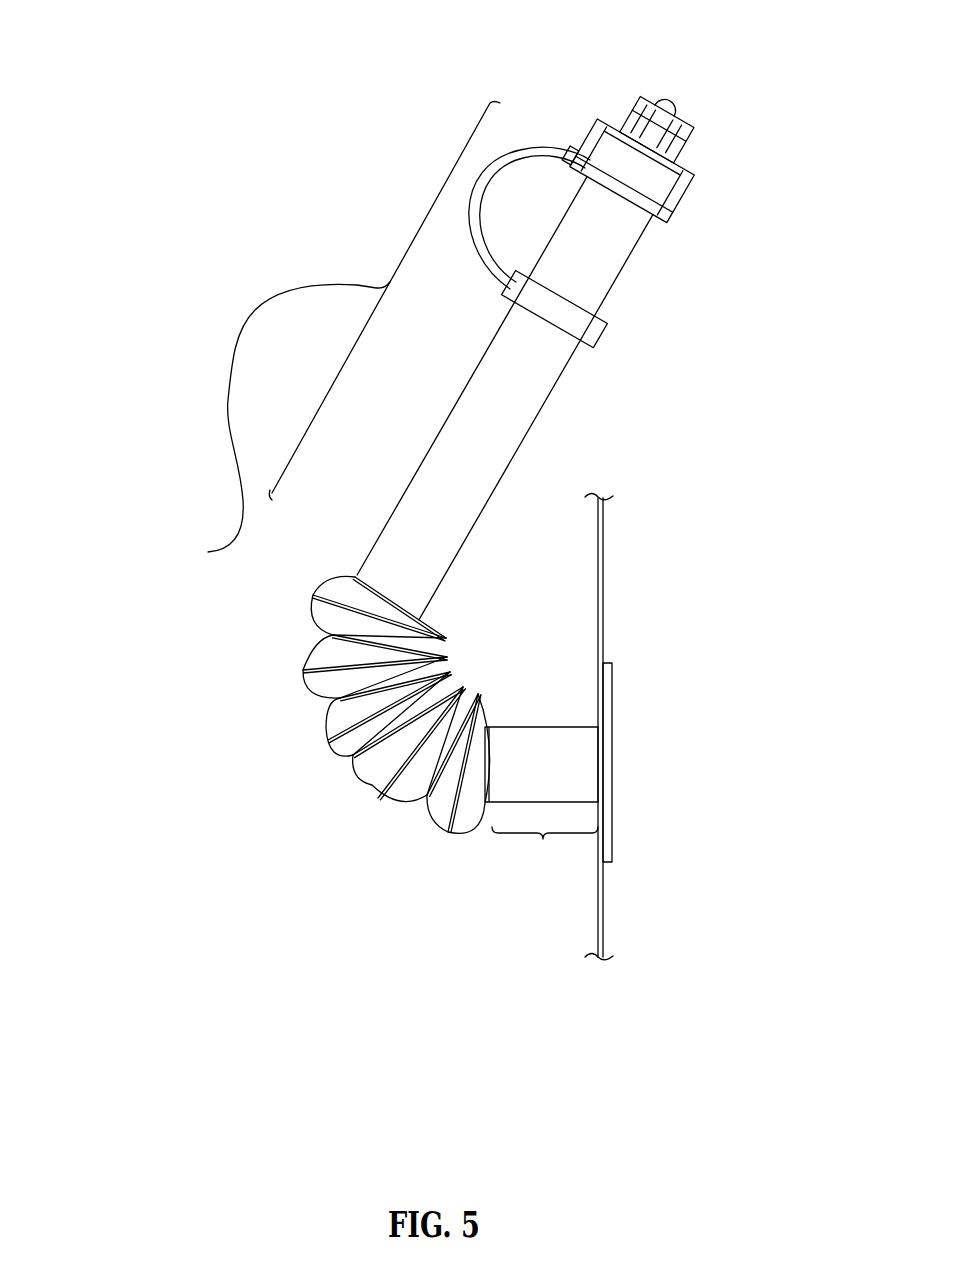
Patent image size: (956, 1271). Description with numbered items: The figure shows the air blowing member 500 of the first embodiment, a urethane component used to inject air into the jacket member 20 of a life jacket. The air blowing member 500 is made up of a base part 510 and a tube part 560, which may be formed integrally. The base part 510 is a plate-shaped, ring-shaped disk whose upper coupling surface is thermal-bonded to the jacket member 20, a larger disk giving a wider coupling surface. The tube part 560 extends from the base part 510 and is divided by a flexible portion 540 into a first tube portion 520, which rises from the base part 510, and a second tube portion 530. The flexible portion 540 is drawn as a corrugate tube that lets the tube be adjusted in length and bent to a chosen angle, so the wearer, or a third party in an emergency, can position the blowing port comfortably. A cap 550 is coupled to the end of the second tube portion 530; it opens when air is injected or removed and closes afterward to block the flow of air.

The jacket member 20 is at (603, 577).
The air blowing member 500 is at (567, 26).
The base part 510 is at (608, 743).
The first tube portion 520 is at (543, 840).
The second tube portion 530 is at (408, 361).
The flexible portion 540 is at (217, 577).
The cap 550 is at (694, 177).
The tube part 560 is at (158, 542).